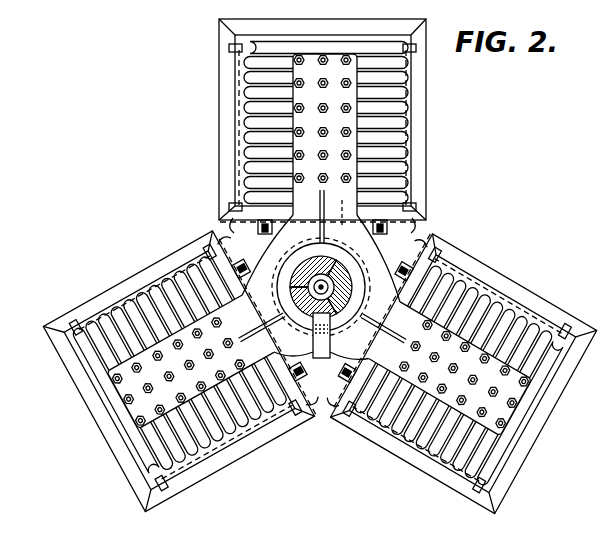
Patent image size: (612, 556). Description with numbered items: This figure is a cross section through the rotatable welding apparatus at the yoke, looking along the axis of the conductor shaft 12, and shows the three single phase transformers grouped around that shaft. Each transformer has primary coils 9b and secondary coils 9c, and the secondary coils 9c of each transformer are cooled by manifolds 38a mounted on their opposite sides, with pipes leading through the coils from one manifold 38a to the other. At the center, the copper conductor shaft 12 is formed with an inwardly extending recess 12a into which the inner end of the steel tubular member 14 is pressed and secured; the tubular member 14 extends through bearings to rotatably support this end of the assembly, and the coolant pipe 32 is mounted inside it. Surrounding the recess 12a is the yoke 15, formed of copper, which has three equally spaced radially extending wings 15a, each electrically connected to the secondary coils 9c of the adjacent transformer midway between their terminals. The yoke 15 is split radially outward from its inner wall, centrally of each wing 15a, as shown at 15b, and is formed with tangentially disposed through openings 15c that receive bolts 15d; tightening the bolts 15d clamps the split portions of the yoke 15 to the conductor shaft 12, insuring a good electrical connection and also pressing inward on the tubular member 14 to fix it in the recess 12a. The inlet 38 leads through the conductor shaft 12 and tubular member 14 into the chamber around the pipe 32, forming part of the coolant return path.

The primary coils 9b is at (392, 98).
The secondary coils 9c is at (400, 85).
The conductor shaft 12 is at (317, 262).
The recess 12a is at (292, 277).
The tubular member 14 is at (352, 293).
The yoke 15 is at (374, 258).
The wings 15a is at (345, 147).
The split 15b is at (360, 330).
The through openings 15c is at (344, 206).
The bolts 15d is at (322, 360).
The pipe 32 is at (332, 262).
The inlet 38 is at (286, 328).
The manifolds 38a is at (192, 487).